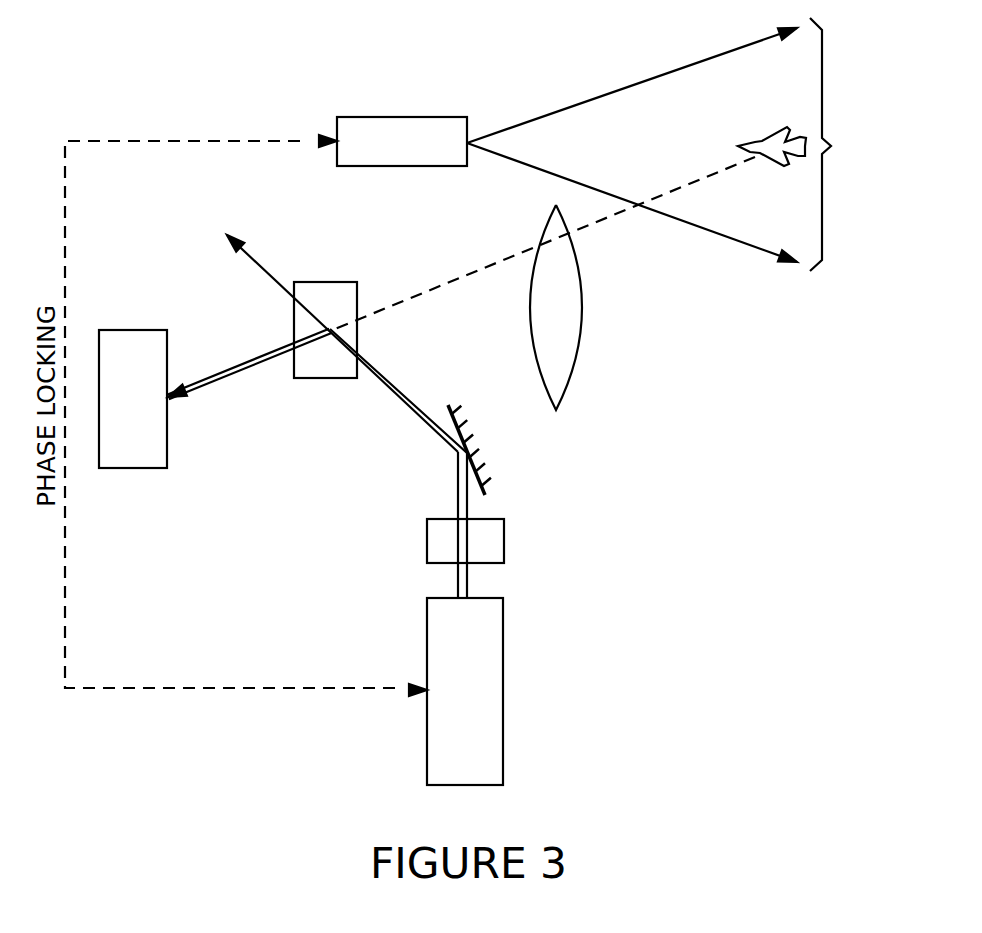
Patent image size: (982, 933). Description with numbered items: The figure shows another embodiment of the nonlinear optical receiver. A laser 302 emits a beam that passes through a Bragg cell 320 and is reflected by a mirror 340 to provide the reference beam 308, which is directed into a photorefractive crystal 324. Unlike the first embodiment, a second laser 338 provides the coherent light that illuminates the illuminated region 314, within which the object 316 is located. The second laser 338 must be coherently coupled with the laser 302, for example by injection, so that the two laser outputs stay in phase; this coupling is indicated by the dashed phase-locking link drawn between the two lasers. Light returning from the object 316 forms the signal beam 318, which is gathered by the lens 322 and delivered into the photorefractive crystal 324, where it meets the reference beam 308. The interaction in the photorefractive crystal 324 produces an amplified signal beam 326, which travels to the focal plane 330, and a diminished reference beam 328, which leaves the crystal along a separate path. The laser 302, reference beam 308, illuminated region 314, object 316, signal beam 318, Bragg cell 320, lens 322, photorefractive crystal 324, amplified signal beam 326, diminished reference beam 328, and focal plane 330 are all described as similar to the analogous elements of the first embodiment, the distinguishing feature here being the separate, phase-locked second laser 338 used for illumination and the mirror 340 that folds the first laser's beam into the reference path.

The laser 302 is at (503, 762).
The reference beam 308 is at (421, 423).
The illuminated region 314 is at (831, 146).
The object 316 is at (767, 140).
The signal beam 318 is at (713, 172).
The Bragg cell 320 is at (504, 550).
The lens 322 is at (582, 306).
The photorefractive crystal 324 is at (327, 282).
The amplified signal beam 326 is at (250, 372).
The diminished reference beam 328 is at (262, 270).
The focal plane 330 is at (120, 469).
The second laser 338 is at (418, 117).
The mirror 340 is at (450, 416).